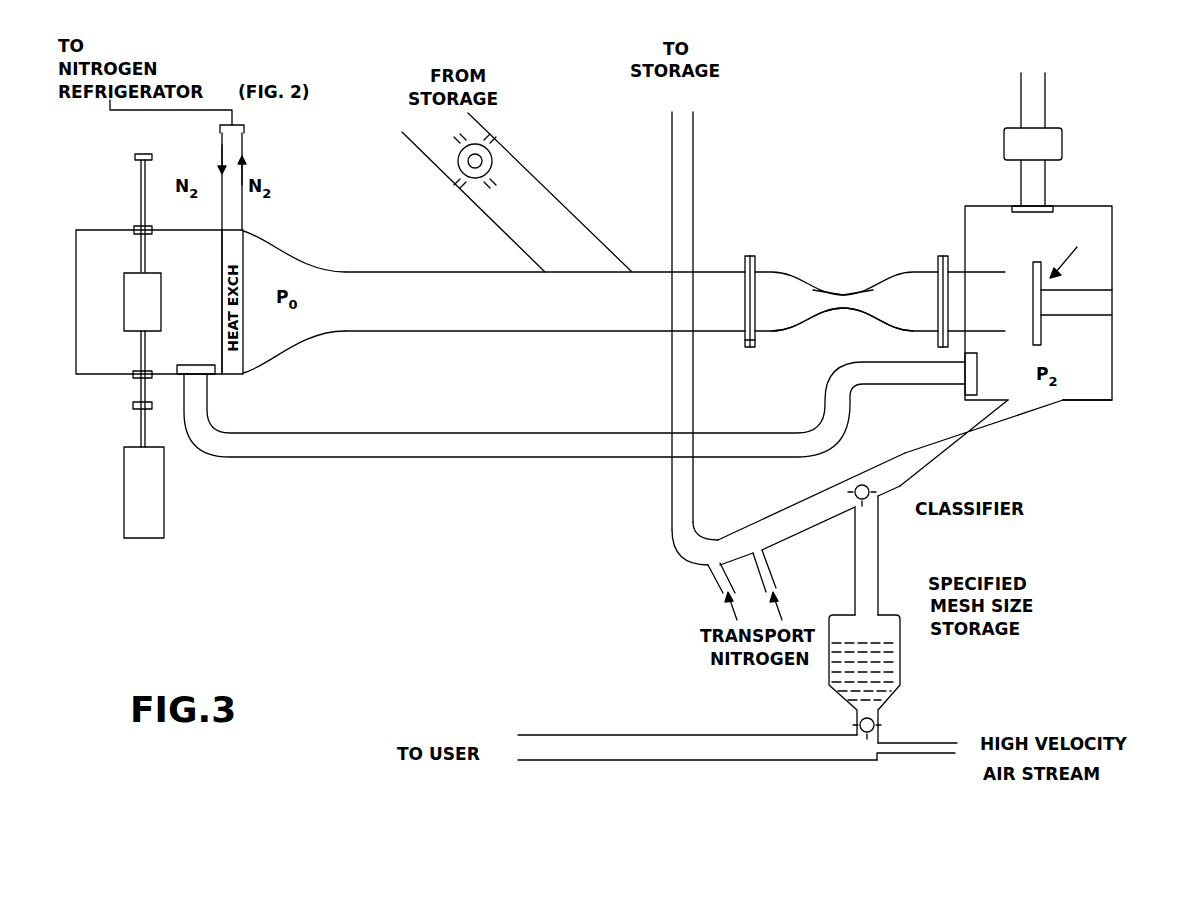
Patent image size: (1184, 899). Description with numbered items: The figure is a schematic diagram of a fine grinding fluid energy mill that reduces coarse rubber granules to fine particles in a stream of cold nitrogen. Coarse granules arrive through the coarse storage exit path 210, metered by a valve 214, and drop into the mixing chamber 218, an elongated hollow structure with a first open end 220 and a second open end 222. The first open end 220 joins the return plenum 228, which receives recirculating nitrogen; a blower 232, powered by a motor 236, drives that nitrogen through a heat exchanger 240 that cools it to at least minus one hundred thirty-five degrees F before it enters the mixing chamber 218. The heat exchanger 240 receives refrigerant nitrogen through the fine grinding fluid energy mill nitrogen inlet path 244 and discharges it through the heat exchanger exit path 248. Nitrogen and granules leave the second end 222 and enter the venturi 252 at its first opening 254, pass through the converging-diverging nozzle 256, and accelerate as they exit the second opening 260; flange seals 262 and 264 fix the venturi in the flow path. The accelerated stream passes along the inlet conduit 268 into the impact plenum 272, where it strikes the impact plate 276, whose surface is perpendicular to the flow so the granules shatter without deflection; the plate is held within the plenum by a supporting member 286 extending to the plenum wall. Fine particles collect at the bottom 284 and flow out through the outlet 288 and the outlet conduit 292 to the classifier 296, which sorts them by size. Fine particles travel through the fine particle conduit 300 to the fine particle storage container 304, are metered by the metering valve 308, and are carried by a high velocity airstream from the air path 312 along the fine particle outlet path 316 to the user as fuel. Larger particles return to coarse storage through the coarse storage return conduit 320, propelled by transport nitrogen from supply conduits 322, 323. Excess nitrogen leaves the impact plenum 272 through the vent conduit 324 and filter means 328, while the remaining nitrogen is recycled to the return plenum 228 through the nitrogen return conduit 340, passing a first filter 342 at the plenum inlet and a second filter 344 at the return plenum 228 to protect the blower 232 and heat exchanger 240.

The coarse storage exit path 210 is at (540, 177).
The valve 214 is at (452, 168).
The mixing chamber 218 is at (476, 333).
The first open end 220 is at (252, 262).
The second open end 222 is at (733, 285).
The return plenum 228 is at (76, 262).
The blower 232 is at (128, 320).
The motor 236 is at (165, 518).
The heat exchanger 240 is at (245, 370).
The fine grinding fluid energy mill nitrogen inlet path 244 is at (222, 207).
The fine grinding fluid energy mill heat exchanger exit path 248 is at (243, 138).
The venturi 252 is at (795, 274).
The first opening 254 is at (766, 302).
The converging-diverging nozzle 256 is at (843, 292).
The second opening 260 is at (930, 295).
The flange seal 262 is at (750, 350).
The flange seal 264 is at (938, 347).
The inlet conduit 268 is at (992, 270).
The impact plenum 272 is at (1112, 228).
The impact plate 276 is at (1043, 340).
The bottom 284 is at (1112, 400).
The plate support 286 is at (1112, 288).
The outlet 288 is at (1018, 405).
The outlet conduit 292 is at (957, 453).
The classifier 296 is at (870, 487).
The fine particle conduit 300 is at (879, 566).
The fine particle storage container 304 is at (900, 667).
The metering valve 308 is at (880, 721).
The air path 312 is at (880, 758).
The fine particle outlet path 316 is at (593, 735).
The coarse storage return conduit 320 is at (670, 514).
The transport nitrogen supply conduit 322 is at (708, 588).
The transport nitrogen supply conduit 323 is at (770, 575).
The vent conduit 324 is at (1045, 92).
The filter means 328 is at (1062, 148).
The nitrogen return conduit 340 is at (458, 454).
The first filter 342 is at (977, 372).
The second filter 344 is at (191, 360).